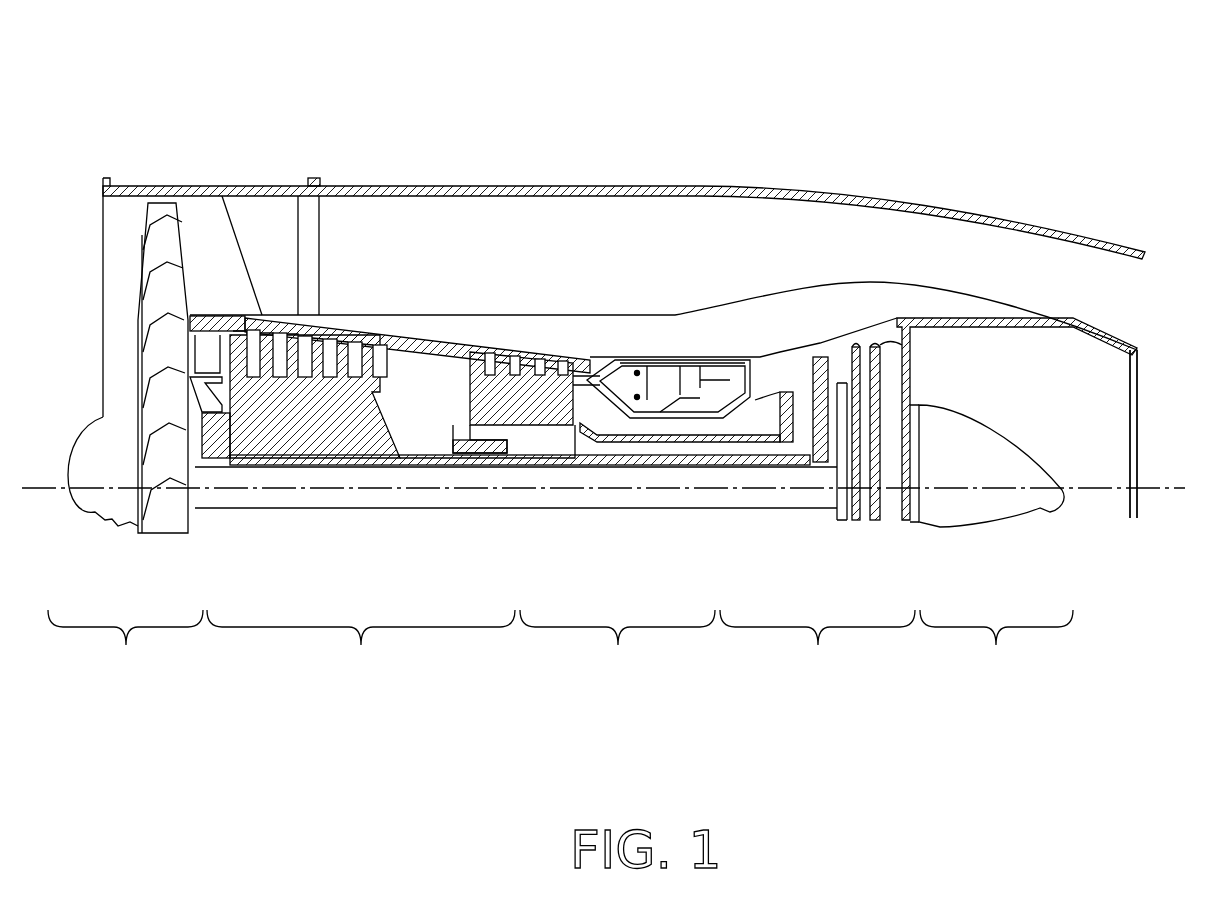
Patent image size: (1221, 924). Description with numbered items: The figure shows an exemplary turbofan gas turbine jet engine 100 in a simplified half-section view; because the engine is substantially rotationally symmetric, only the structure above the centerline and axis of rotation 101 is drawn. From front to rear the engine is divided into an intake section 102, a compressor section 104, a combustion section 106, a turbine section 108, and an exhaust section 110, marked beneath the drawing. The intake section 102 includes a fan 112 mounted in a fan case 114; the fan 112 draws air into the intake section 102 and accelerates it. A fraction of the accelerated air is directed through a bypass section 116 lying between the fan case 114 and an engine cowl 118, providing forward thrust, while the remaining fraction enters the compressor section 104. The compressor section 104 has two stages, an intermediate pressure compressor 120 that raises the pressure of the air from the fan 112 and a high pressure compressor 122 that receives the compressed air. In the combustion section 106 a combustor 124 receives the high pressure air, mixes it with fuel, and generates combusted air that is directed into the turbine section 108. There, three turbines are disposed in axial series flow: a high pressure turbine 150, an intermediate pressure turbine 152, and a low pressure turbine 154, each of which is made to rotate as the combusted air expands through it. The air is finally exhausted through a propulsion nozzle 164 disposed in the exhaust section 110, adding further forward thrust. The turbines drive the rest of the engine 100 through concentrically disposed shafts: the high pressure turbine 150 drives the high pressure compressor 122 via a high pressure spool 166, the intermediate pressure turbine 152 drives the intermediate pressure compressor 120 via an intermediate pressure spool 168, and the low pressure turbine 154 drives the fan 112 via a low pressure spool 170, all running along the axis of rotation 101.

The turbofan gas turbine jet engine 100 is at (358, 132).
The centerline and axis of rotation 101 is at (1170, 490).
The intake section 102 is at (124, 445).
The compressor section 104 is at (543, 464).
The combustion section 106 is at (520, 474).
The turbine section 108 is at (555, 458).
The exhaust section 110 is at (1056, 502).
The fan 112 is at (148, 316).
The fan case 114 is at (222, 186).
The bypass section 116 is at (527, 212).
The engine cowl 118 is at (615, 313).
The intermediate pressure compressor 120 is at (312, 430).
The high pressure compressor 122 is at (530, 435).
The combustor 124 is at (735, 365).
The high pressure turbine 150 is at (770, 365).
The intermediate pressure turbine 152 is at (840, 365).
The low pressure turbine 154 is at (902, 350).
The propulsion nozzle 164 is at (1113, 427).
The high pressure spool 166 is at (623, 440).
The intermediate pressure spool 168 is at (717, 455).
The low pressure spool 170 is at (800, 497).